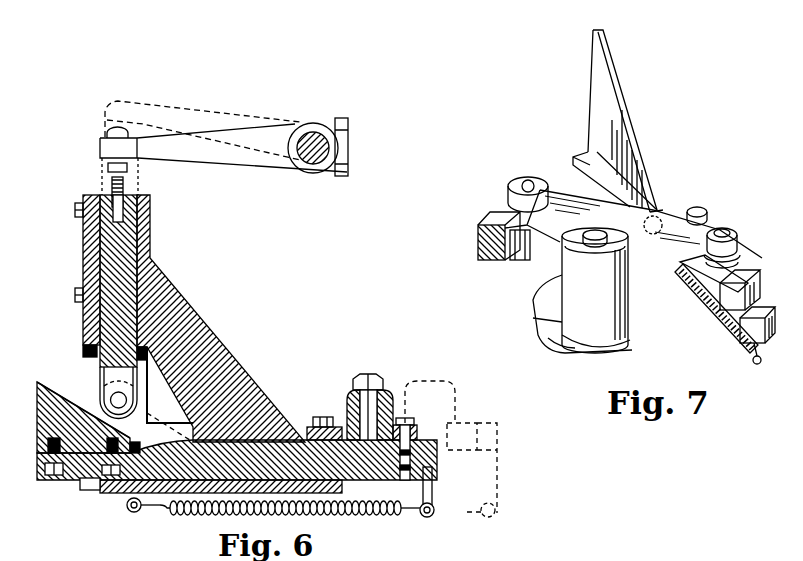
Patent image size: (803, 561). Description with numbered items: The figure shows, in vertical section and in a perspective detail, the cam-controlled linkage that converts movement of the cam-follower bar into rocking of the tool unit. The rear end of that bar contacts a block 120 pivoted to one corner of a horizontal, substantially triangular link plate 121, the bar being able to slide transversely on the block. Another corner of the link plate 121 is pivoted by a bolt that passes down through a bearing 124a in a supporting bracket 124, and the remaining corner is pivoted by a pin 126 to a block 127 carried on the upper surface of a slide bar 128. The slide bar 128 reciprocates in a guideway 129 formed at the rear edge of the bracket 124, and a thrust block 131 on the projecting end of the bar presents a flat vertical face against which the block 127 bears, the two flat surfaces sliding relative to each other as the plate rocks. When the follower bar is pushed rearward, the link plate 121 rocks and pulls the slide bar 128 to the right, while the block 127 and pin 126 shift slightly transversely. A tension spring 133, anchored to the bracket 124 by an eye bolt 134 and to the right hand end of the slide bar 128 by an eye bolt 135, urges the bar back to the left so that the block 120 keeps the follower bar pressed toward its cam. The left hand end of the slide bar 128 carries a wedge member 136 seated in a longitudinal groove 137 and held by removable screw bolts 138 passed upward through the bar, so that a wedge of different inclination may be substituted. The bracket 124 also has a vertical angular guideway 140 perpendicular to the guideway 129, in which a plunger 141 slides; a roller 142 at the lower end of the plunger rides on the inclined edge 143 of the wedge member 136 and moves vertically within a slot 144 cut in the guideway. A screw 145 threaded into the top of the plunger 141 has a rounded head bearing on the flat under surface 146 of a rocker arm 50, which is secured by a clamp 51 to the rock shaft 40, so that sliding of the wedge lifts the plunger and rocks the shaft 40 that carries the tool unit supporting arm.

In FIG. 6, the rock shaft 40 is at (318, 136).
In FIG. 6, the rocker arm 50 is at (222, 160).
In FIG. 6, the clamp 51 is at (349, 135).
In FIG. 7, the block 120 is at (498, 247).
In FIG. 6, the link plate 121 is at (388, 405).
In FIG. 7, the link plate 121 is at (555, 262).
In FIG. 6, the supporting bracket 124 is at (187, 503).
In FIG. 7, the supporting bracket 124 is at (630, 289).
In FIG. 7, the bearing 124a is at (603, 311).
In FIG. 6, the pin 126 is at (366, 375).
In FIG. 7, the pin 126 is at (728, 238).
In FIG. 6, the block 127 is at (350, 412).
In FIG. 7, the block 127 is at (733, 262).
In FIG. 6, the slide bar 128 is at (360, 472).
In FIG. 7, the slide bar 128 is at (755, 312).
In FIG. 6, the guideway 129 is at (316, 424).
In FIG. 7, the guideway 129 is at (662, 190).
In FIG. 6, the thrust block 131 is at (417, 433).
In FIG. 7, the thrust block 131 is at (745, 285).
In FIG. 6, the spring 133 is at (362, 516).
In FIG. 7, the spring 133 is at (718, 327).
In FIG. 6, the eye bolt 134 is at (135, 513).
In FIG. 6, the eye bolt 135 is at (430, 516).
In FIG. 7, the eye bolt 135 is at (757, 363).
In FIG. 6, the wedge member 136 is at (40, 388).
In FIG. 6, the longitudinal groove 137 is at (128, 506).
In FIG. 6, the screw bolts 138 is at (53, 476).
In FIG. 6, the guideway 140 is at (151, 213).
In FIG. 6, the plunger 141 is at (135, 243).
In FIG. 6, the roller 142 is at (144, 393).
In FIG. 6, the inclined edge 143 is at (71, 400).
In FIG. 6, the vertical slot 144 is at (85, 352).
In FIG. 6, the screw 145 is at (121, 192).
In FIG. 6, the flat surface 146 is at (107, 168).